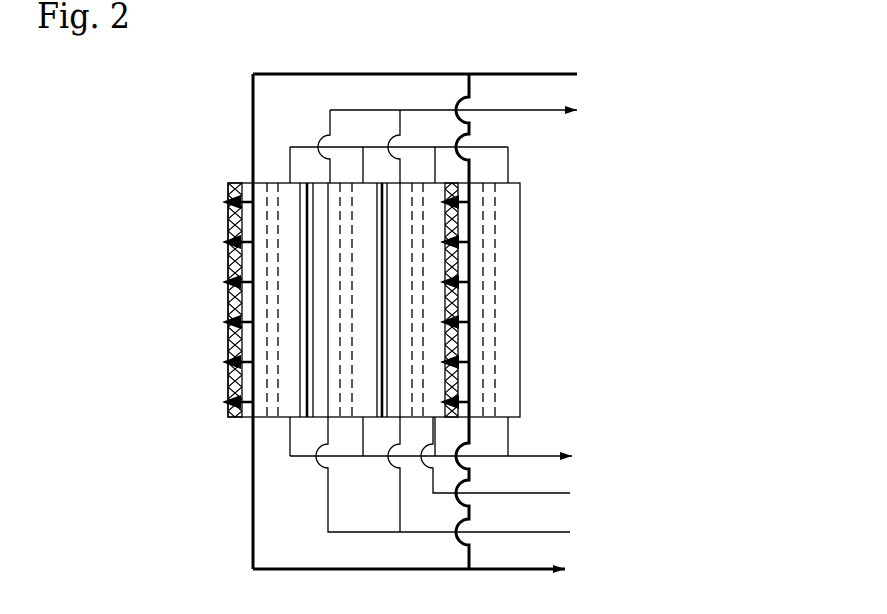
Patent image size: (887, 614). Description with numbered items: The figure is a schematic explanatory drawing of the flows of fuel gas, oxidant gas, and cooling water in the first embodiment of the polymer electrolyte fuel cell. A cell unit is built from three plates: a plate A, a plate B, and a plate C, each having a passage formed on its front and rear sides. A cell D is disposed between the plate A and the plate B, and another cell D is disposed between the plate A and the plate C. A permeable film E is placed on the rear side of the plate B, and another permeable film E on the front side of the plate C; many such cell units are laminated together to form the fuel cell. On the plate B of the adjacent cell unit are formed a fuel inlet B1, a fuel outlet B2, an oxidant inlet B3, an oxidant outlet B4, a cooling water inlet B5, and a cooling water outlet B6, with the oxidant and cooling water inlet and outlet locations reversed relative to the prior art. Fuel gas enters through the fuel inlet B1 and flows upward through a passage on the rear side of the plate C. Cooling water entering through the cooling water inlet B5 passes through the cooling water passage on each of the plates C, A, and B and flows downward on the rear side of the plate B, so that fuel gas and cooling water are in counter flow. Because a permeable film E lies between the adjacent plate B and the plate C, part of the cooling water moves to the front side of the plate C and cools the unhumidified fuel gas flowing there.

The fuel inlet B1 is at (563, 463).
The fuel outlet B2 is at (501, 457).
The oxidant inlet B3 is at (520, 482).
The oxidant outlet B4 is at (529, 139).
The cooling water inlet B5 is at (516, 314).
The cooling water outlet B6 is at (516, 570).
The cell D is at (307, 253).
The permeable film E is at (226, 340).
The plate A is at (341, 286).
The plate B is at (573, 182).
The plate C is at (414, 286).